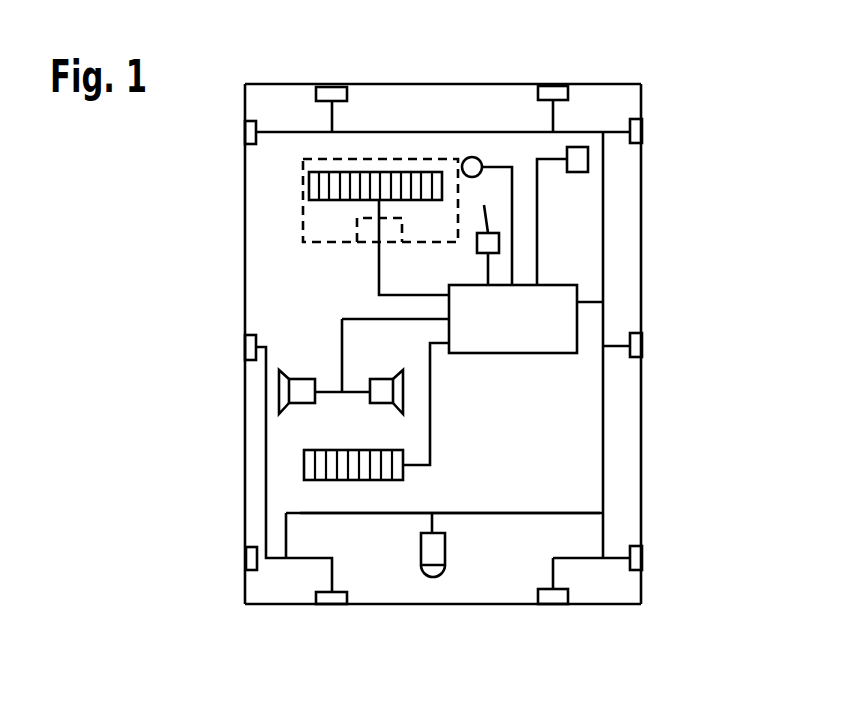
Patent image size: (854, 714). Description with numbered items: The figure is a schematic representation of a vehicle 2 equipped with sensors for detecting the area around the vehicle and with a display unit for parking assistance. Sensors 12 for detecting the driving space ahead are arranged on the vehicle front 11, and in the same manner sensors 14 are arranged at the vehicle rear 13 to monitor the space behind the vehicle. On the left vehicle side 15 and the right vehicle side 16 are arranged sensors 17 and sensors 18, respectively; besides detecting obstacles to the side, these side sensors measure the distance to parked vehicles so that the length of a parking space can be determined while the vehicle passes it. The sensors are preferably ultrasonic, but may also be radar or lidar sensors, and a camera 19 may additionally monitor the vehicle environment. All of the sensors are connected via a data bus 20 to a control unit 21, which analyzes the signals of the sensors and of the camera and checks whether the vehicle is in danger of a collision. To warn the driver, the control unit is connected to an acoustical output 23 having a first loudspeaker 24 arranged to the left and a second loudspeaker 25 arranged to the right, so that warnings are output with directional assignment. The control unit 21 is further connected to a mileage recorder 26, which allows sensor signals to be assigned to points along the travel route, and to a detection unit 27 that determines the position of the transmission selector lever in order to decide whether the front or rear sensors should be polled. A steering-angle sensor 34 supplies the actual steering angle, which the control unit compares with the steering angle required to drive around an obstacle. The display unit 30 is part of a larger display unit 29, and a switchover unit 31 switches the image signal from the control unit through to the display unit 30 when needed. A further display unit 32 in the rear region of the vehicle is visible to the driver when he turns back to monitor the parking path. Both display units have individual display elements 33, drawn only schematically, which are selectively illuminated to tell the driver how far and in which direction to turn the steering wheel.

The vehicle 2 is at (220, 324).
The vehicle front 11 is at (289, 84).
The sensors 12 is at (550, 85).
The vehicle rear 13 is at (446, 606).
The sensors 14 is at (327, 606).
The left vehicle side 15 is at (245, 160).
The right vehicle side 16 is at (642, 222).
The sensors 17 is at (245, 130).
The sensors 18 is at (643, 132).
The camera 19 is at (418, 550).
The data bus 20 is at (540, 512).
The control unit 21 is at (555, 343).
The acoustical output 23 is at (342, 319).
The first loudspeaker 24 is at (279, 390).
The second loudspeaker 25 is at (403, 397).
The mileage recorder 26 is at (588, 160).
The detection unit 27 is at (499, 243).
The larger display unit 29 is at (303, 243).
The display unit 30 is at (309, 193).
The switchover unit 31 is at (362, 243).
The display unit 32 is at (304, 470).
The display elements 33 is at (309, 178).
The steering-angle sensor 34 is at (482, 167).